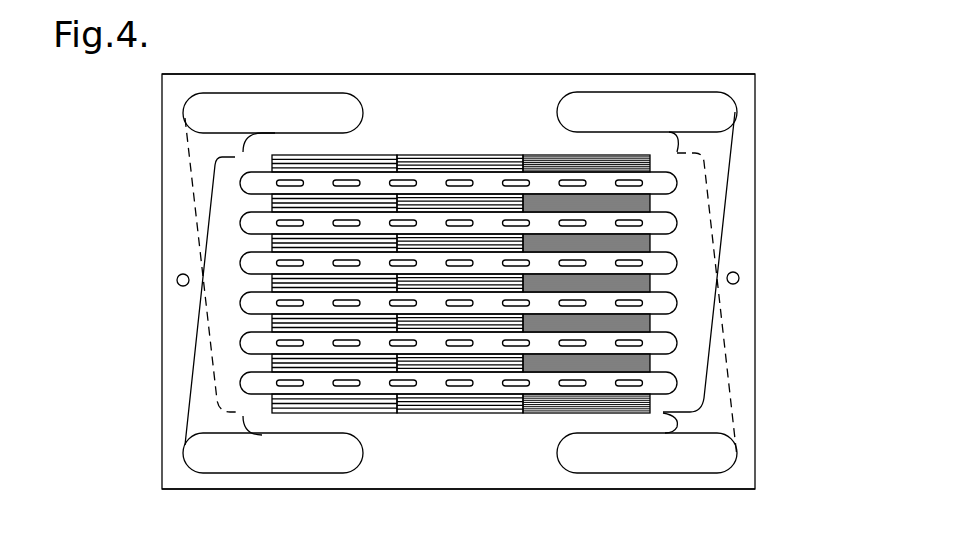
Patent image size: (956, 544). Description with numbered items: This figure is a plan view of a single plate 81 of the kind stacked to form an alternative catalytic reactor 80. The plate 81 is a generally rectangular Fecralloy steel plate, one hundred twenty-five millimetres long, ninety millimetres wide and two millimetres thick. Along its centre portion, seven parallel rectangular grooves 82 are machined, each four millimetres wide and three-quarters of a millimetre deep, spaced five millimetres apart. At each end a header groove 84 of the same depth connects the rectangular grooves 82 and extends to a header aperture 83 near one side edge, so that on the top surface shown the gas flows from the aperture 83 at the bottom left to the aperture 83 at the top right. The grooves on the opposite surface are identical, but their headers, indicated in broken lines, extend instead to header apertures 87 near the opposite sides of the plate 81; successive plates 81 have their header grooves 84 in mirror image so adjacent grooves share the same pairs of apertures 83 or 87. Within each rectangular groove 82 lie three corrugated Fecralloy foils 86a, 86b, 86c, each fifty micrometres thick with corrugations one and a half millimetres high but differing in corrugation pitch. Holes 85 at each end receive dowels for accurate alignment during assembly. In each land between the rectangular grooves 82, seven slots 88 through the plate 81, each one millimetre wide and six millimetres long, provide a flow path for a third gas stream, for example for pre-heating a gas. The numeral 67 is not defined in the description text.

The housing plate 67 is at (270, 73).
The reactor 80 is at (730, 58).
The plate 81 is at (548, 95).
The rectangular groove 82 is at (425, 193).
The header aperture 83 is at (730, 110).
The header groove 84 is at (700, 236).
The hole 85 is at (180, 274).
The corrugated Fecralloy foil 86a is at (368, 413).
The corrugated Fecralloy foil 86b is at (437, 413).
The corrugated Fecralloy foil 86c is at (535, 413).
The header aperture 87 is at (197, 119).
The slot 88 is at (567, 181).